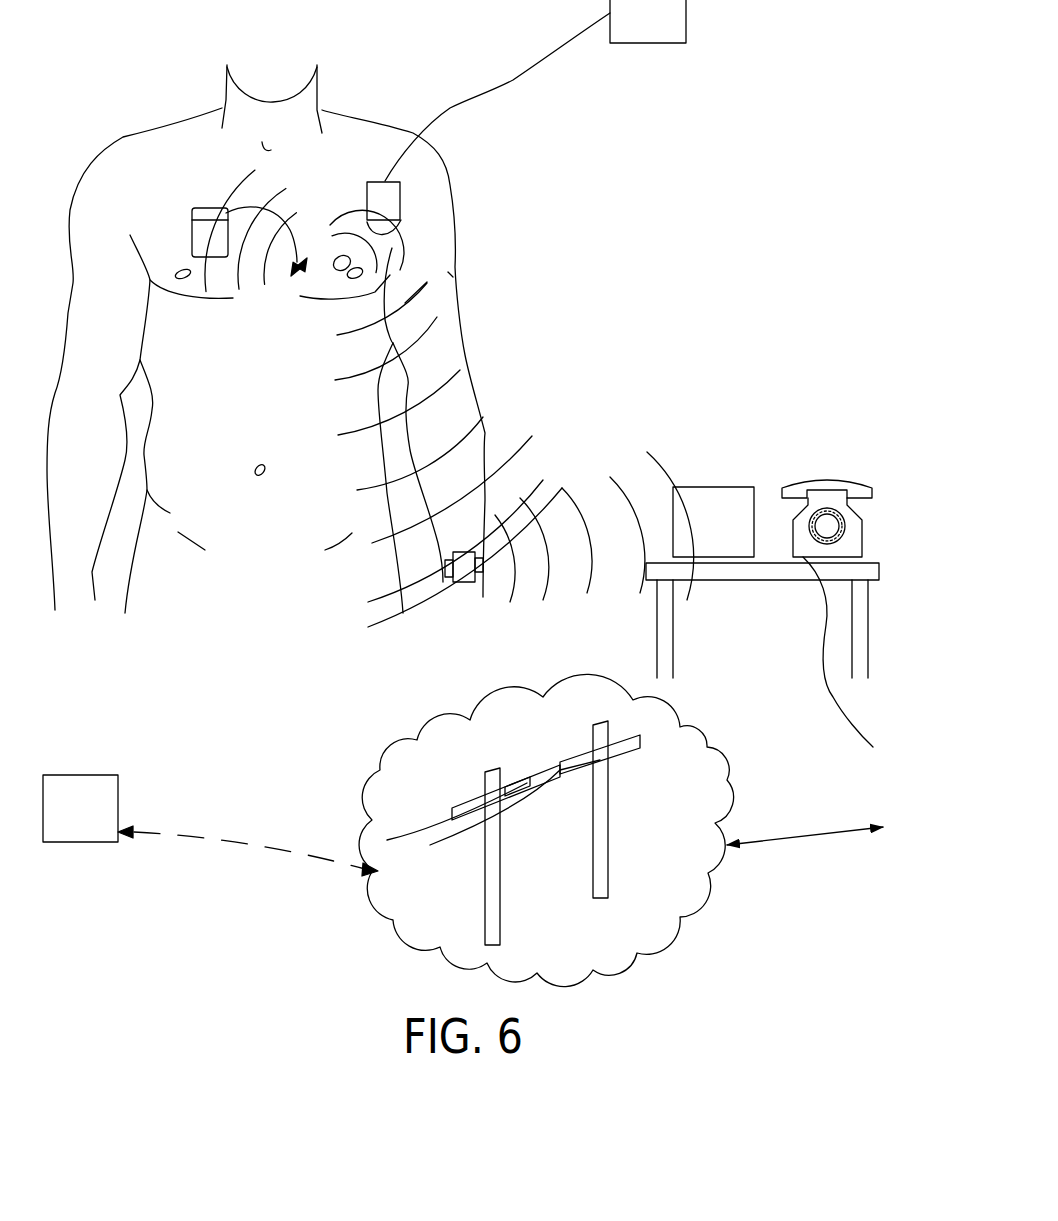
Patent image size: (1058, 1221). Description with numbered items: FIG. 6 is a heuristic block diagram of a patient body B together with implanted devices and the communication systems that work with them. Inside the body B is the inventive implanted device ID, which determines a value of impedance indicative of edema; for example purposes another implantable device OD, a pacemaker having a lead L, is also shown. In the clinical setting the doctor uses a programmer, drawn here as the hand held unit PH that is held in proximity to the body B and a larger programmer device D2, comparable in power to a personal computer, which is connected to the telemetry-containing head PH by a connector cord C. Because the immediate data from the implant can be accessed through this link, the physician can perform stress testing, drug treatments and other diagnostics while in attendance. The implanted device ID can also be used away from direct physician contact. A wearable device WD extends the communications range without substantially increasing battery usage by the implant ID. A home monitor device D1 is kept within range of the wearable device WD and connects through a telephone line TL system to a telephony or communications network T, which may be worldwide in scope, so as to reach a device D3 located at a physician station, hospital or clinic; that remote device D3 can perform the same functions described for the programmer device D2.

The patient body B is at (188, 424).
The connector cord C is at (513, 80).
The home monitor device D1 is at (713, 522).
The programmer device D2 is at (648, 21).
The remote physician device D3 is at (210, 825).
The implanted device ID is at (337, 256).
The lead L is at (303, 272).
The other implantable device OD is at (186, 237).
The hand held unit PH is at (384, 208).
The telephony or communications network T is at (546, 830).
The telephone line TL is at (765, 834).
The wearable device WD is at (465, 584).